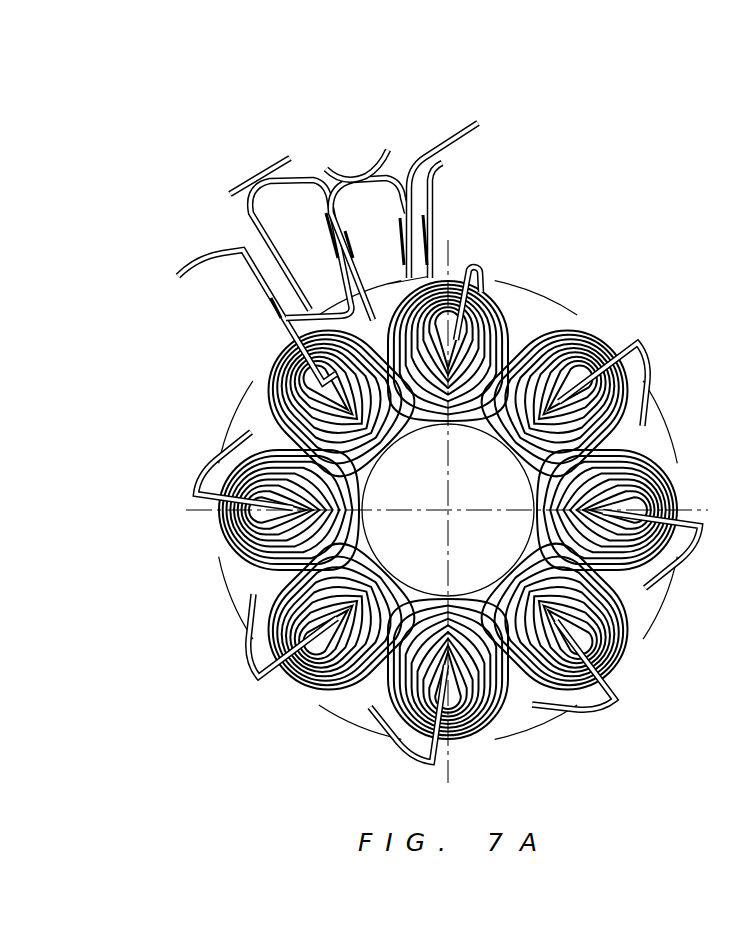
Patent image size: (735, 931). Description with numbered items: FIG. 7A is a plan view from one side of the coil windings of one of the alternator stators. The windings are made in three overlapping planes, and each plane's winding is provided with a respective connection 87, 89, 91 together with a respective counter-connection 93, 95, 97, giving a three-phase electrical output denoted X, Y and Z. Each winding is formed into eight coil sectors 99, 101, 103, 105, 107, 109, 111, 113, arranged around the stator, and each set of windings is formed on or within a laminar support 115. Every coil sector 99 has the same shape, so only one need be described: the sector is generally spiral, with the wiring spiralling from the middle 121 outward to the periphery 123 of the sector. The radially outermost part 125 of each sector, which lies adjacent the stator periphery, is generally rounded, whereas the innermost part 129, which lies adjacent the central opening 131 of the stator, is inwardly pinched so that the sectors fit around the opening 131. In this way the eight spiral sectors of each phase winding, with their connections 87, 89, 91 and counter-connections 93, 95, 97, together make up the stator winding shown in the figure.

The connection 87 is at (265, 245).
The connection 89 is at (337, 202).
The connection 91 is at (438, 135).
The counter-connection 93 is at (204, 250).
The counter-connection 95 is at (247, 167).
The counter-connection 97 is at (340, 165).
The coil sector 99 is at (637, 660).
The coil sector 101 is at (452, 742).
The coil sector 103 is at (283, 700).
The coil sector 105 is at (200, 520).
The coil sector 107 is at (248, 345).
The coil sector 109 is at (485, 258).
The coil sector 111 is at (578, 298).
The coil sector 113 is at (683, 483).
The laminar support 115 is at (645, 426).
The middle 121 is at (568, 622).
The periphery 123 is at (600, 705).
The radially outermost part 125 is at (622, 682).
The innermost part 129 is at (524, 535).
The opening 131 is at (383, 532).